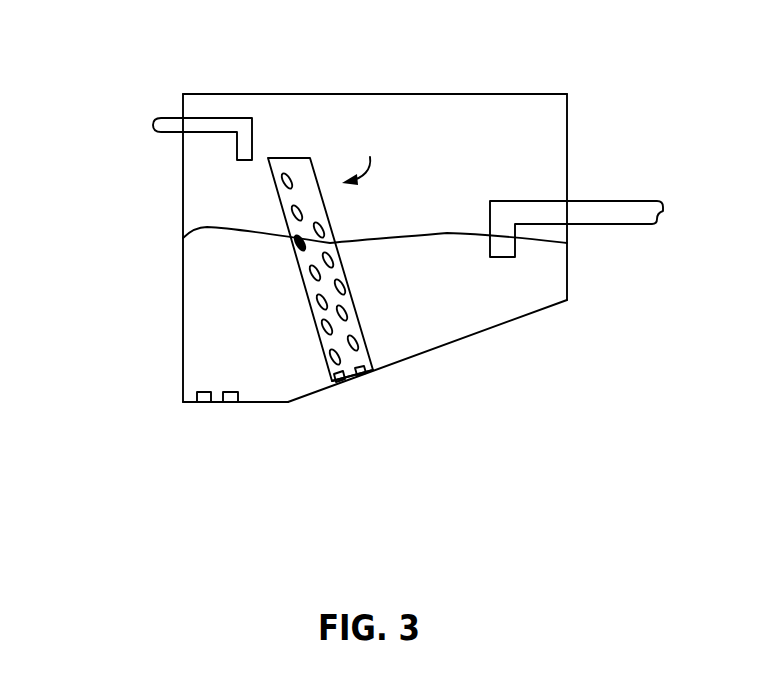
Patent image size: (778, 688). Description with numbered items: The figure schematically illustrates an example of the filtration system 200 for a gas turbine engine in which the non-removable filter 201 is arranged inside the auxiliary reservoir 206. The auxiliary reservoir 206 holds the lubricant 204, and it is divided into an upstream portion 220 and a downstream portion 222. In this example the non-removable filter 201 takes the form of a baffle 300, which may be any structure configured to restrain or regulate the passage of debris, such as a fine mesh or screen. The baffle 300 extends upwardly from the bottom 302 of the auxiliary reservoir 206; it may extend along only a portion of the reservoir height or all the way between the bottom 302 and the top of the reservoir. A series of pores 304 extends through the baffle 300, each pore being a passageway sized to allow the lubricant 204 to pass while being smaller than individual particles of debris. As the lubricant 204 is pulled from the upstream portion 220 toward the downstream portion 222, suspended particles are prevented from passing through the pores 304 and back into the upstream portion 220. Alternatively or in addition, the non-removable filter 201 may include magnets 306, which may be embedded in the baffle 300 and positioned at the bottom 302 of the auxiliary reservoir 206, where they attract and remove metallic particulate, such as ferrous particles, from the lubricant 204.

The filtration system 200 is at (116, 54).
The non-removable filter 201 is at (367, 157).
The lubricant 204 is at (193, 322).
The auxiliary reservoir 206 is at (353, 94).
The upstream portion 220 is at (268, 402).
The downstream portion 222 is at (522, 318).
The baffle 300 is at (326, 269).
The bottom of the auxiliary reservoir 302 is at (325, 389).
The pores 304 is at (310, 303).
The magnets 306 is at (229, 392).